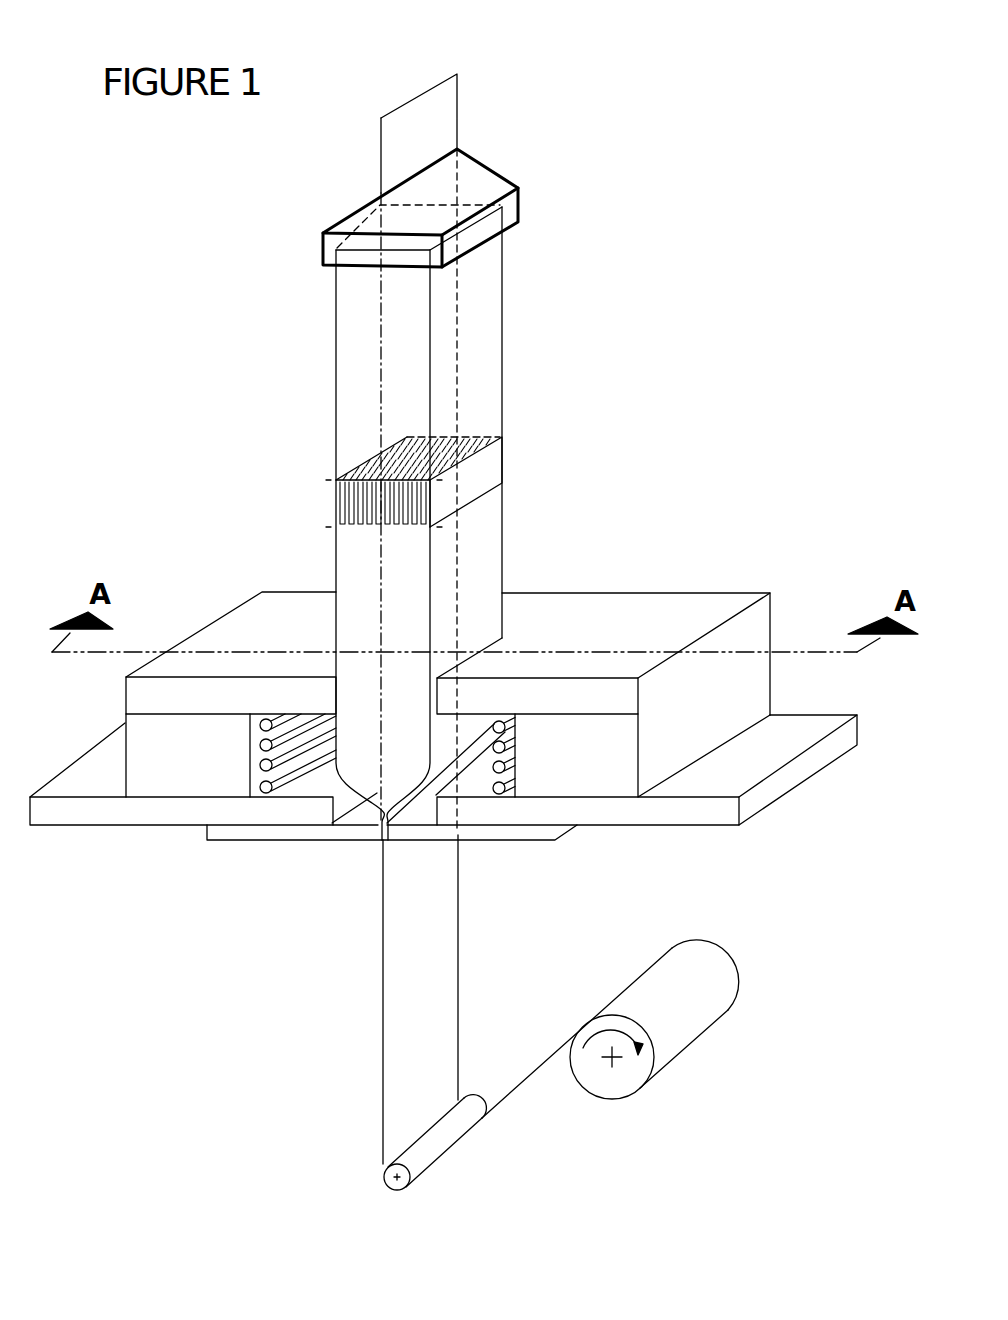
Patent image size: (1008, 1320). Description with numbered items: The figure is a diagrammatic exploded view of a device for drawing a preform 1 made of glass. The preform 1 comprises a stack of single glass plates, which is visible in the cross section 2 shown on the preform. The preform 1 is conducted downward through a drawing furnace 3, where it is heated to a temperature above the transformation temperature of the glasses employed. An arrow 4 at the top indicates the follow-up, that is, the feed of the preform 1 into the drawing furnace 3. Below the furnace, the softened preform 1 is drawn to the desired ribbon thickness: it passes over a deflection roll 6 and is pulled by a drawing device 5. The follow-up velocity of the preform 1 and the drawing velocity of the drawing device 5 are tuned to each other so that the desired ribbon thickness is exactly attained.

The preform 1 is at (482, 325).
The cross section 2 is at (345, 501).
The drawing furnace 3 is at (693, 608).
The arrow 4 is at (415, 92).
The drawing device 5 is at (672, 1043).
The deflection roll 6 is at (423, 1155).